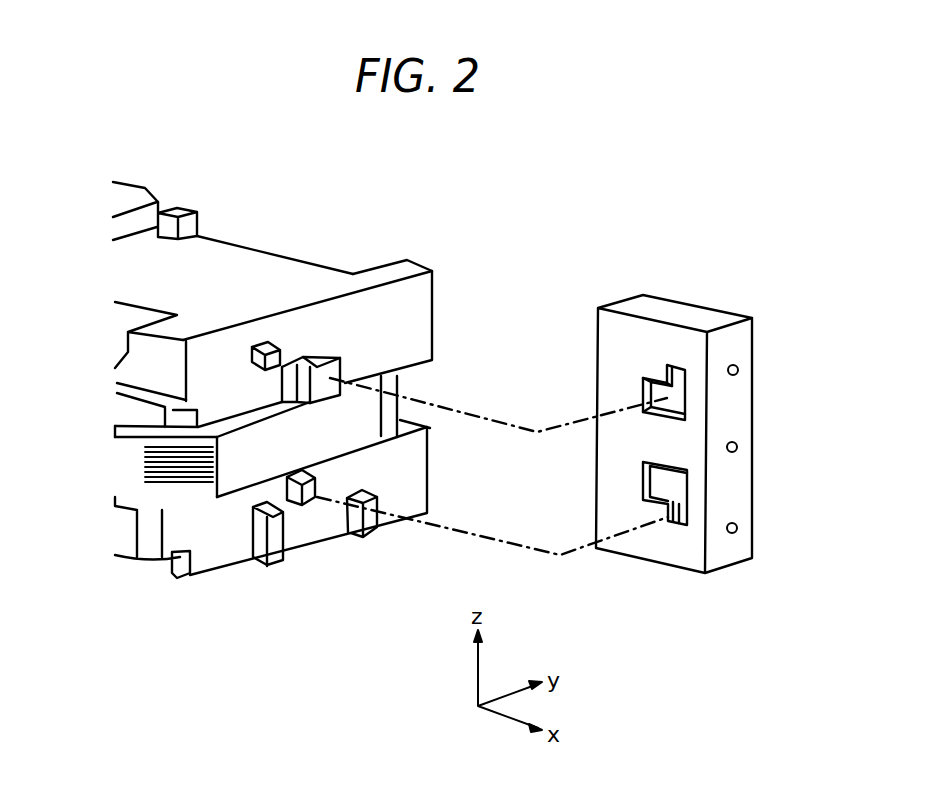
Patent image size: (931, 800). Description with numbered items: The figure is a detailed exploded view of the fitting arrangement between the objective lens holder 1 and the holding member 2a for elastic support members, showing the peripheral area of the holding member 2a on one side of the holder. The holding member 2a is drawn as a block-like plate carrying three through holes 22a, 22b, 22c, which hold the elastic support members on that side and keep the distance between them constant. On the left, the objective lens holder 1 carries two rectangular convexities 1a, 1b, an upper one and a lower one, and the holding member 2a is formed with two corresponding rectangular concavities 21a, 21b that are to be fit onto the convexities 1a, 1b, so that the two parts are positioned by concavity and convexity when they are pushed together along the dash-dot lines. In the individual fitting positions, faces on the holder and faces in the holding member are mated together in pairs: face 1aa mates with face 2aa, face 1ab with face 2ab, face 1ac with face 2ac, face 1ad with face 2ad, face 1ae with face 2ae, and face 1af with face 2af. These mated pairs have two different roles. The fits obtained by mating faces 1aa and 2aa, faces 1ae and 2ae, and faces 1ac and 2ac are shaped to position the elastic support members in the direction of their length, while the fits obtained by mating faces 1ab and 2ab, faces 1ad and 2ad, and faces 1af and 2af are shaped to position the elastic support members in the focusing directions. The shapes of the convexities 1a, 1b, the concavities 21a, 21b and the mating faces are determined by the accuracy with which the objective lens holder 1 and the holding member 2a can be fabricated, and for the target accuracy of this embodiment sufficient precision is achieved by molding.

The objective lens holder 1 is at (177, 210).
The rectangular convexity 1a is at (322, 349).
The face 1aa is at (297, 382).
The face 1ab is at (298, 352).
The face 1ac is at (345, 372).
The face 1ad is at (347, 398).
The face 1ae is at (250, 510).
The face 1af is at (307, 505).
The rectangular convexity 1b is at (288, 505).
The holding member for elastic support members 2a is at (677, 312).
The face 2aa is at (683, 408).
The face 2ab is at (660, 380).
The face 2ac is at (643, 394).
The face 2ad is at (663, 422).
The face 2ae is at (683, 510).
The face 2af is at (672, 522).
The rectangular concavity 21a is at (673, 401).
The rectangular concavity 21b is at (688, 507).
The through hole for holding elastic support member 22a is at (739, 369).
The through hole for holding elastic support member 22b is at (738, 448).
The through hole for holding elastic support member 22c is at (737, 530).